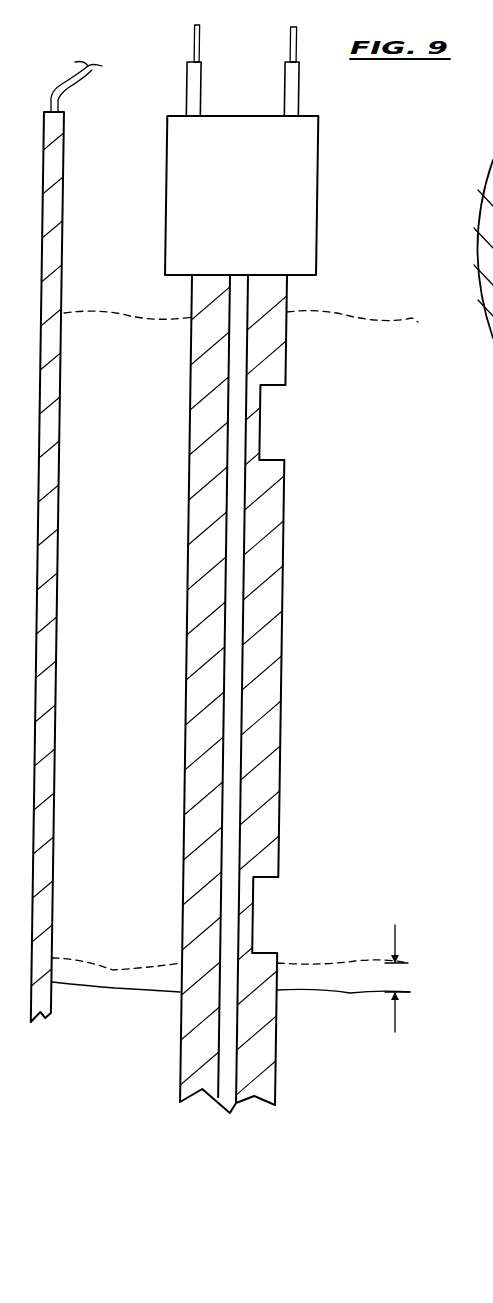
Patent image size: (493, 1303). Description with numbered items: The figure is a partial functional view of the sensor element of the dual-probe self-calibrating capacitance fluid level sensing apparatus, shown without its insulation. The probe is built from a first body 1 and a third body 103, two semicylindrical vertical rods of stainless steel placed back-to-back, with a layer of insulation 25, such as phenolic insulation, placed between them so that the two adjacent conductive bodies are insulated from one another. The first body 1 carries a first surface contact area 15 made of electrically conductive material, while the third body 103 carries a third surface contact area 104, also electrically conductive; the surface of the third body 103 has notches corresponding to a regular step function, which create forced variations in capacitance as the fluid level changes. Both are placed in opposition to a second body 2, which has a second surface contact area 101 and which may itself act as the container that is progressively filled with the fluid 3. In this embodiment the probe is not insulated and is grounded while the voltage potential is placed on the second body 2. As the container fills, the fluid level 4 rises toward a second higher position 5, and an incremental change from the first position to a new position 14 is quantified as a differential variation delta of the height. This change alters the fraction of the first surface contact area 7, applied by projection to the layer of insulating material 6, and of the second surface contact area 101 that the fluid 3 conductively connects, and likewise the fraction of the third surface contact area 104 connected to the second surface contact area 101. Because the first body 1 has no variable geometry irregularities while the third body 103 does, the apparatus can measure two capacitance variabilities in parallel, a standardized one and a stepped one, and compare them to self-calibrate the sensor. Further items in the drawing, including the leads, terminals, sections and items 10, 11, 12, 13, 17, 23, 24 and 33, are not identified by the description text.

The first body 1 is at (483, 210).
The second body 2 is at (54, 785).
The fluid 3 is at (302, 1078).
The fluid level 4 is at (312, 993).
The second higher position 5 is at (241, 334).
The layer of insulating material 6 is at (283, 157).
The first surface contact area 7 is at (263, 788).
The upper section 10 is at (180, 195).
The intermediate section 11 is at (70, 93).
The lower section 12 is at (299, 68).
The connection lead 13 is at (296, 45).
The new position 14 is at (440, 955).
The first surface contact area 15 is at (186, 664).
The sheath 17 is at (280, 647).
The terminal 23 is at (188, 95).
The lead wire 24 is at (194, 38).
The layer of insulation 25 is at (230, 1113).
The probe assembly 33 is at (394, 186).
The second surface contact area 101 is at (58, 596).
The third body 103 is at (283, 572).
The third surface contact area 104 is at (282, 600).